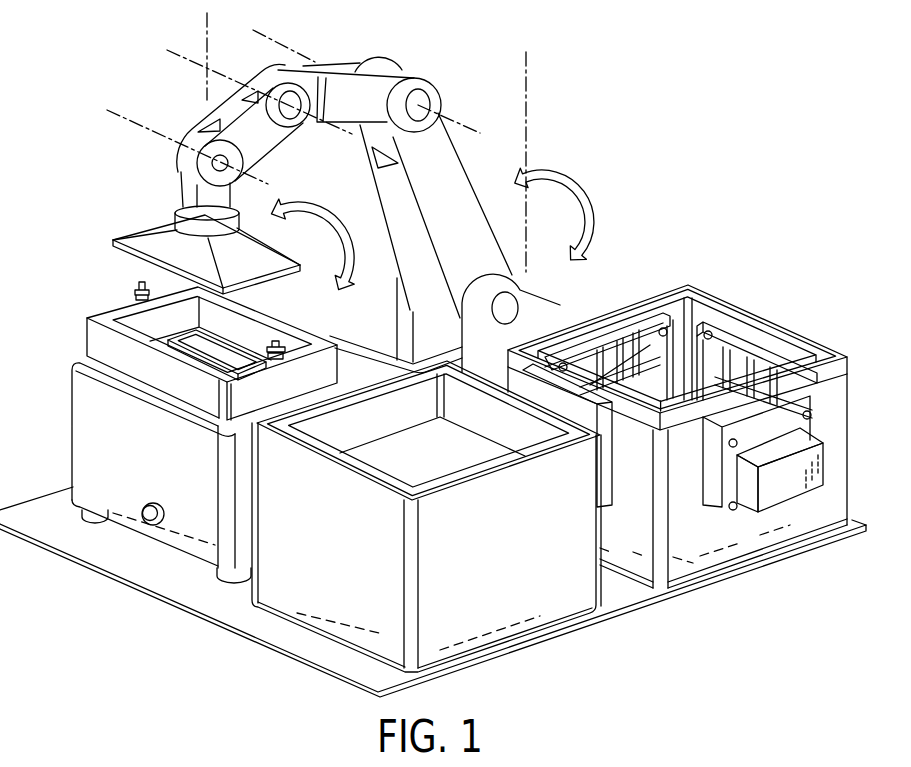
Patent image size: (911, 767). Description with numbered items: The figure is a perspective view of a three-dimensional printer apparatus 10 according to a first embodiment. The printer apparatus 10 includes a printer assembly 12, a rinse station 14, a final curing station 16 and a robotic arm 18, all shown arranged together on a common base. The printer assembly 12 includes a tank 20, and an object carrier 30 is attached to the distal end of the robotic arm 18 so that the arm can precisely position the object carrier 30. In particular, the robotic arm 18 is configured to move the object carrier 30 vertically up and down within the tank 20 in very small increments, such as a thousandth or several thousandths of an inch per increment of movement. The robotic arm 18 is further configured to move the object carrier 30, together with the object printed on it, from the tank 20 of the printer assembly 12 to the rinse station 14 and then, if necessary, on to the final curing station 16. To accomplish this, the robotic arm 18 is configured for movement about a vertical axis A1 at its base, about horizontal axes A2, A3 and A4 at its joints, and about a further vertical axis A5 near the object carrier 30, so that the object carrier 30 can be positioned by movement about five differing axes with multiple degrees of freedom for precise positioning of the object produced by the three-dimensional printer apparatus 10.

The 3-D printer apparatus 10 is at (708, 136).
The printer assembly 12 is at (110, 301).
The rinse station 14 is at (526, 590).
The final curing station 16 is at (772, 311).
The robotic arm 18 is at (480, 168).
The tank 20 is at (100, 419).
The object carrier 30 is at (257, 262).
The vertical axis A1 is at (527, 74).
The horizontal axis A2 is at (462, 127).
The horizontal axis A3 is at (180, 59).
The horizontal axis A4 is at (117, 117).
The vertical axis A5 is at (207, 30).